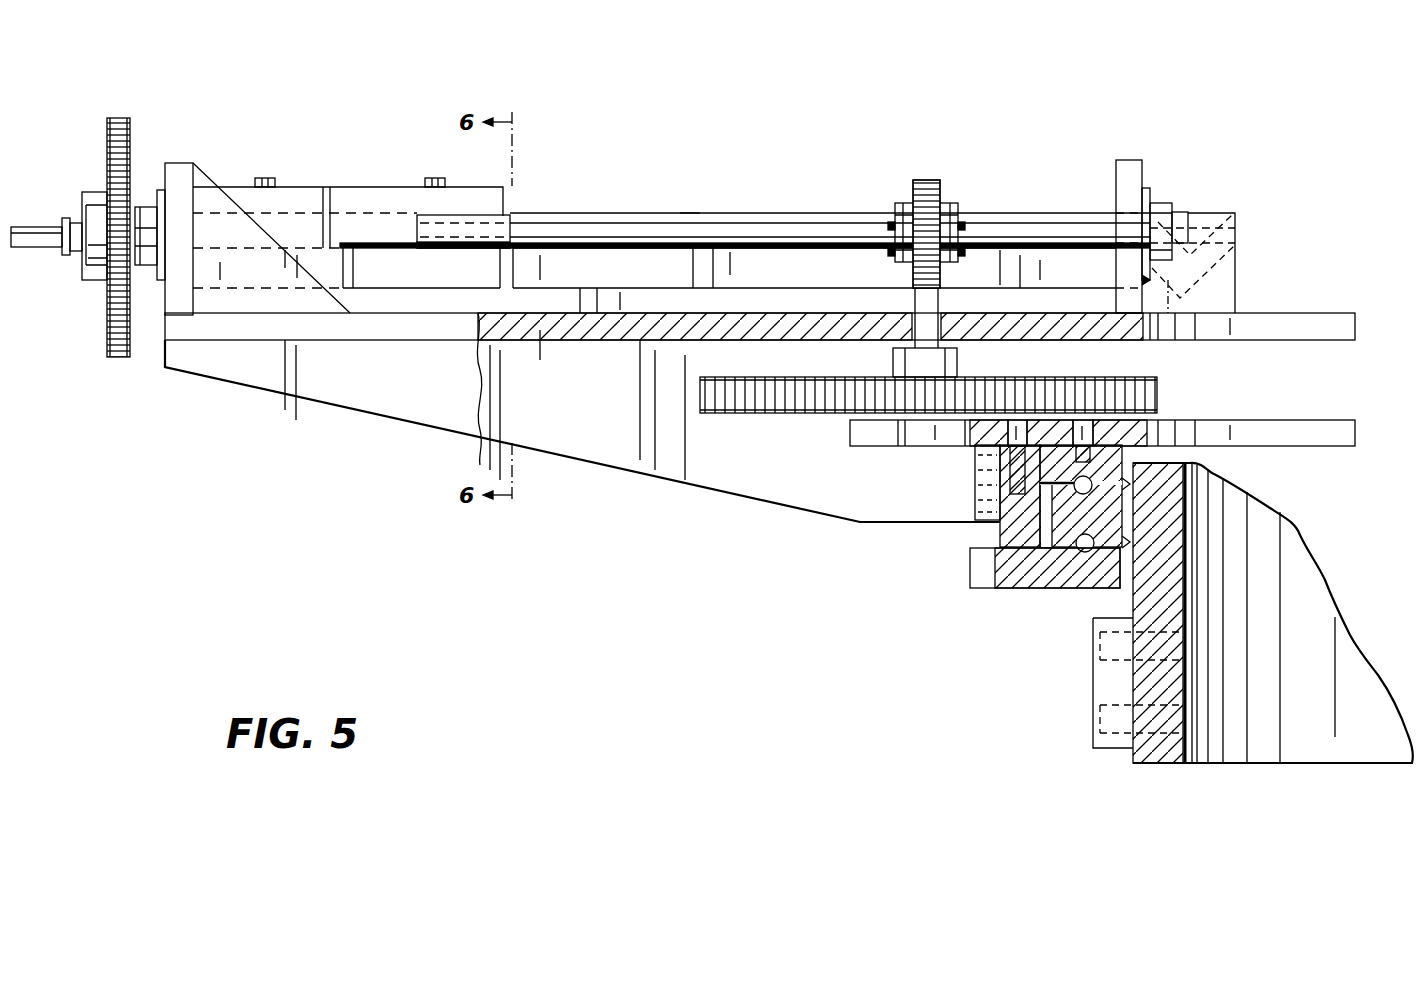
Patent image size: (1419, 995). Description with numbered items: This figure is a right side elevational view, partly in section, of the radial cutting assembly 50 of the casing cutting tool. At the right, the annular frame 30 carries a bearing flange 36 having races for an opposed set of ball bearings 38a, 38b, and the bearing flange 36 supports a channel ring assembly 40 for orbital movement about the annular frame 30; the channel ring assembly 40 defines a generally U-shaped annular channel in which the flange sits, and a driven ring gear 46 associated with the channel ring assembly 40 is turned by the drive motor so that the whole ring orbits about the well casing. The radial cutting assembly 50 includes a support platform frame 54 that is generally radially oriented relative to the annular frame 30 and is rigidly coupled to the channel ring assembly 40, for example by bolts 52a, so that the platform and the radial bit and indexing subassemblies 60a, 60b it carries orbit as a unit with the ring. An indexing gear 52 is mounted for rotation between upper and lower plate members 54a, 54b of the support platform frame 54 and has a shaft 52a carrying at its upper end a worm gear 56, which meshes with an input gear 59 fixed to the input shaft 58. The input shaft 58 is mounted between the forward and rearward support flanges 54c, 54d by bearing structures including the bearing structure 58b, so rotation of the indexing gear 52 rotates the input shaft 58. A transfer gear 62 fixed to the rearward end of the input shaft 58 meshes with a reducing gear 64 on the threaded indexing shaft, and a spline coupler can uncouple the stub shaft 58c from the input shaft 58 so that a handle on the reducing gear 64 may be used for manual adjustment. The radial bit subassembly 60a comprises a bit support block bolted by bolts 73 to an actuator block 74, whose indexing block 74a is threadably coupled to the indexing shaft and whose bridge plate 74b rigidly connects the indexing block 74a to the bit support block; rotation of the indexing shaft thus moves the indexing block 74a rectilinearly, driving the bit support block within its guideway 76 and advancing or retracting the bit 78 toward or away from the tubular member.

The annular frame 30 is at (1326, 660).
The bearing flange 36 is at (1120, 508).
The ball bearings 38a is at (1135, 443).
The ball bearings 38b is at (1085, 553).
The channel ring assembly 40 is at (1000, 528).
The driven ring gear 46 is at (980, 588).
The radial cutting assembly 50 is at (448, 559).
The indexing gear 52 is at (790, 404).
The shaft 52a is at (920, 300).
The support platform frame 54 is at (586, 407).
The upper plate member 54a is at (692, 340).
The lower plate member 54b is at (863, 446).
The forward support flange 54c is at (1128, 160).
The rearward support flange 54d is at (185, 164).
The worm gear 56 is at (955, 204).
The input shaft 58 is at (815, 222).
The bearing structure 58b is at (1170, 203).
The stub shaft 58c is at (147, 266).
The input gear 59 is at (928, 180).
The radial bit subassembly 60a is at (689, 203).
The indexing subassembly 60b is at (95, 316).
The transfer gear 62 is at (96, 256).
The reducing gear 64 is at (130, 119).
The bolts 73 is at (265, 177).
The actuator block 74 is at (512, 189).
The indexing block 74a is at (412, 282).
The bridge plate 74b is at (325, 189).
The guideway 76 is at (642, 277).
The bit 78 is at (1228, 235).